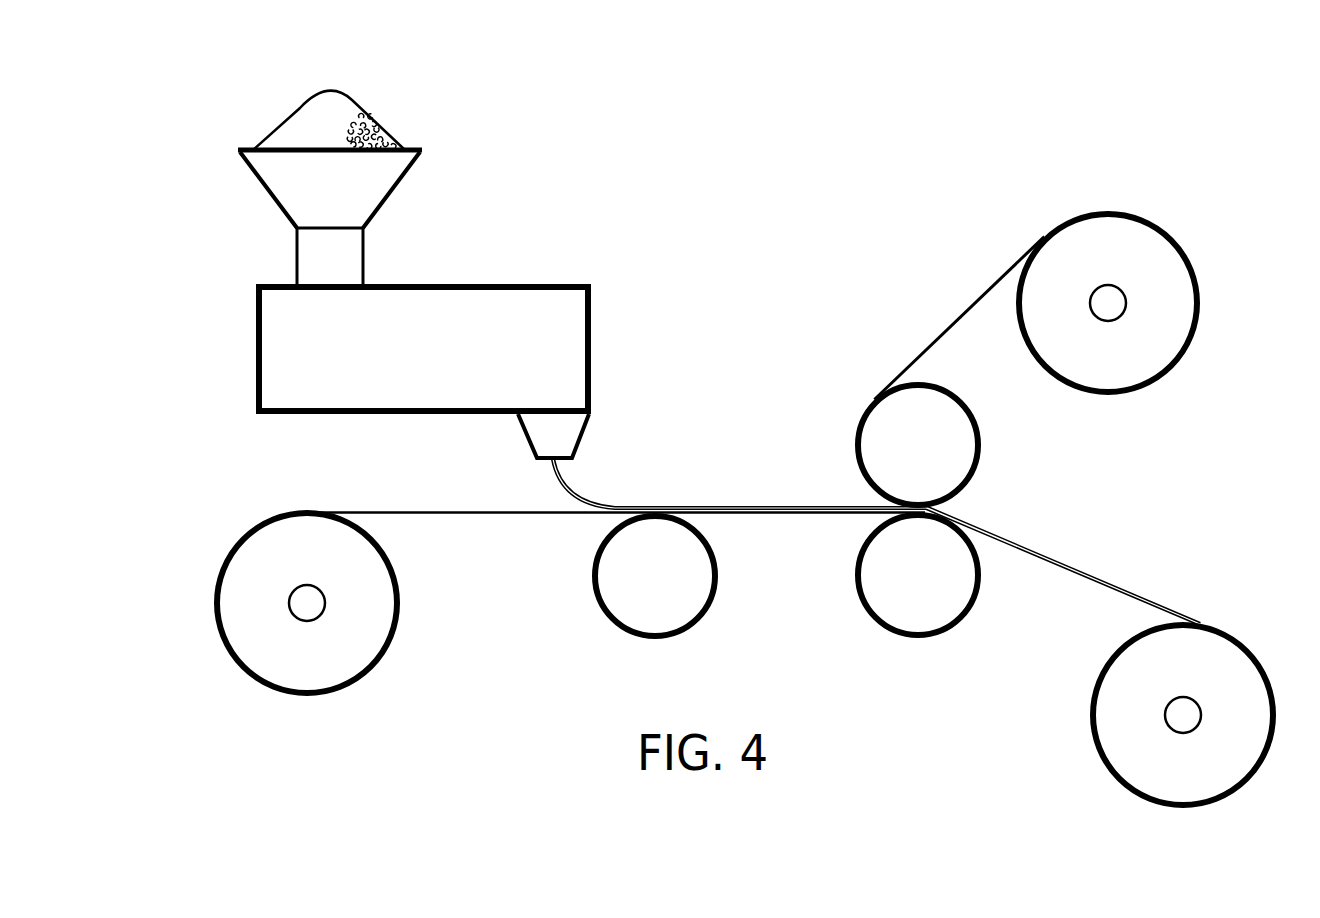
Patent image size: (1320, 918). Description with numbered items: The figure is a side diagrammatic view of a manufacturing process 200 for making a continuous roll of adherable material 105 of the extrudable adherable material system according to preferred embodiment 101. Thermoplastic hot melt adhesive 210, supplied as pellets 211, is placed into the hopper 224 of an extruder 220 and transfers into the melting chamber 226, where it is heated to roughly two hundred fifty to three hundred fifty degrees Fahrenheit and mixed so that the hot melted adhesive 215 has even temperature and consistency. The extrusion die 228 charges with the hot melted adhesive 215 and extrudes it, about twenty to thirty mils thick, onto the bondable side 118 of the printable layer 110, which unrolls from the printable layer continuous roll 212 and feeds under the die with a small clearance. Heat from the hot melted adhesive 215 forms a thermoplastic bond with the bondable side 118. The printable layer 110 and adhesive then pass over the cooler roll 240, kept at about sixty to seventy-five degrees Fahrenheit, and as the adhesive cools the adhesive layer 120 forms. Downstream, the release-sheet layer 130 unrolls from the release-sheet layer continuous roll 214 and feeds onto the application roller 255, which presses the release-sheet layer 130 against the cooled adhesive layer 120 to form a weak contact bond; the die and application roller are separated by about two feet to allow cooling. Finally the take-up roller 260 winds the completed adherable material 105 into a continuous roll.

The preferred embodiment 101 is at (1162, 122).
The manufacturing process 200 is at (1000, 140).
The extruder 220 is at (250, 285).
The hopper 224 is at (370, 190).
The thermoplastic hot melt adhesive 210 is at (328, 97).
The pellets 211 is at (373, 125).
The melting chamber 226 is at (263, 367).
The extrusion die 228 is at (530, 438).
The hot melted adhesive 215 is at (580, 494).
The bondable side 118 is at (385, 511).
The printable layer 110 is at (514, 511).
The adhesive layer 120 is at (769, 507).
The printable layer continuous roll 212 is at (398, 600).
The cooler roll 240 is at (592, 584).
The application roller 255 is at (981, 434).
The release-sheet layer 130 is at (963, 313).
The release-sheet layer continuous roll 214 is at (1199, 290).
The adherable material 105 is at (1087, 562).
The take-up roller 260 is at (1092, 720).